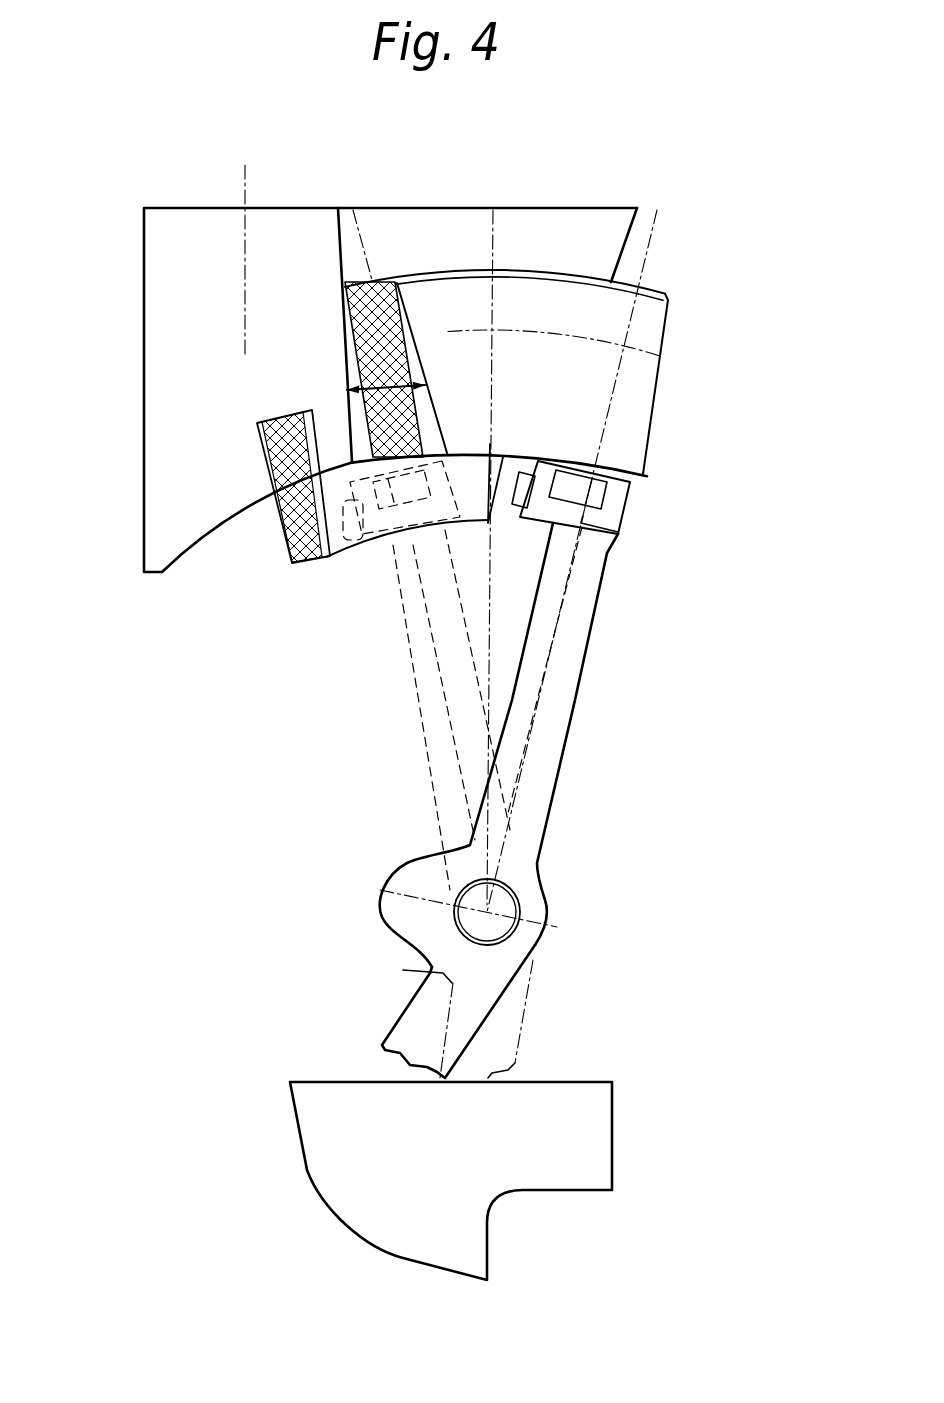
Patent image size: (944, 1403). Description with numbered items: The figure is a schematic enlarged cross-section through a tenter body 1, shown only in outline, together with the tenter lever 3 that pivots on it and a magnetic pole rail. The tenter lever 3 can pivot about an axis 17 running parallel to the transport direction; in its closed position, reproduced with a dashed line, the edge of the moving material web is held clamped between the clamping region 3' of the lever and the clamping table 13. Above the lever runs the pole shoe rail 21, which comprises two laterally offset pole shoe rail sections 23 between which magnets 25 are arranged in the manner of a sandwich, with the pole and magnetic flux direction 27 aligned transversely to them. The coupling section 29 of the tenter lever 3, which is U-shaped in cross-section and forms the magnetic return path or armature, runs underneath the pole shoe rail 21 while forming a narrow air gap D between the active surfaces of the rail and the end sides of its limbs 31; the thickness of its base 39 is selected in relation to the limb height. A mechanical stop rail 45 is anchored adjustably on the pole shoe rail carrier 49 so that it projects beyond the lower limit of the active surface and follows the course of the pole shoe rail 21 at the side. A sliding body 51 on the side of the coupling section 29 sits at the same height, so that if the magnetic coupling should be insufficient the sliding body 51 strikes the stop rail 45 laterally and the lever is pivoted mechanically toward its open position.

The tenter body 1 is at (270, 853).
The tenter lever 3 is at (554, 769).
The clamping region 3' is at (404, 1011).
The clamping table 13 is at (588, 1135).
The axis 17 is at (490, 910).
The pole shoe rail 21 is at (373, 263).
The pole shoe rail sections 23 is at (347, 367).
The magnets 25 is at (343, 297).
The pole and magnetic flux direction 27 is at (410, 427).
The coupling section 29 is at (635, 515).
The limbs 31 is at (617, 498).
The base 39 is at (617, 537).
The stop rail 45 is at (290, 525).
The pole shoe rail carrier 49 is at (160, 283).
The sliding body 51 is at (520, 517).
The air gap D is at (557, 460).